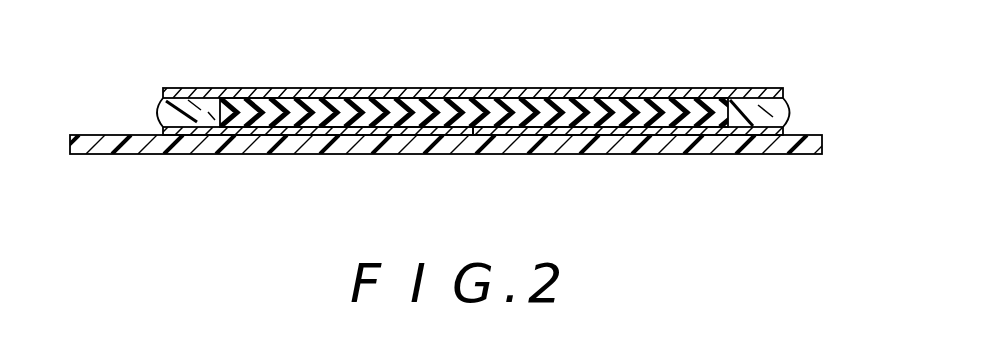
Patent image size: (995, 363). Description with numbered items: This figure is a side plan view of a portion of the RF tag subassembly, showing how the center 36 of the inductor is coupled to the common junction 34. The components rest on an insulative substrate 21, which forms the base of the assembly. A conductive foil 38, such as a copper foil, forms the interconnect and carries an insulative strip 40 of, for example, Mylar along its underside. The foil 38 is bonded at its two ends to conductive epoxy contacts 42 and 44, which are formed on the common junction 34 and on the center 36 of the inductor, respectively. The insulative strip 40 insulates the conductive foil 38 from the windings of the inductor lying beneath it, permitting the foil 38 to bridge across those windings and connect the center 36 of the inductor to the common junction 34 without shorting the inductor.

The insulative substrate 21 is at (273, 155).
The common junction 34 is at (160, 128).
The center of inductor 36 is at (782, 128).
The conductive foil 38 is at (660, 88).
The insulative strip 40 is at (310, 98).
The conductive epoxy contact 42 is at (163, 96).
The conductive epoxy contact 44 is at (782, 98).